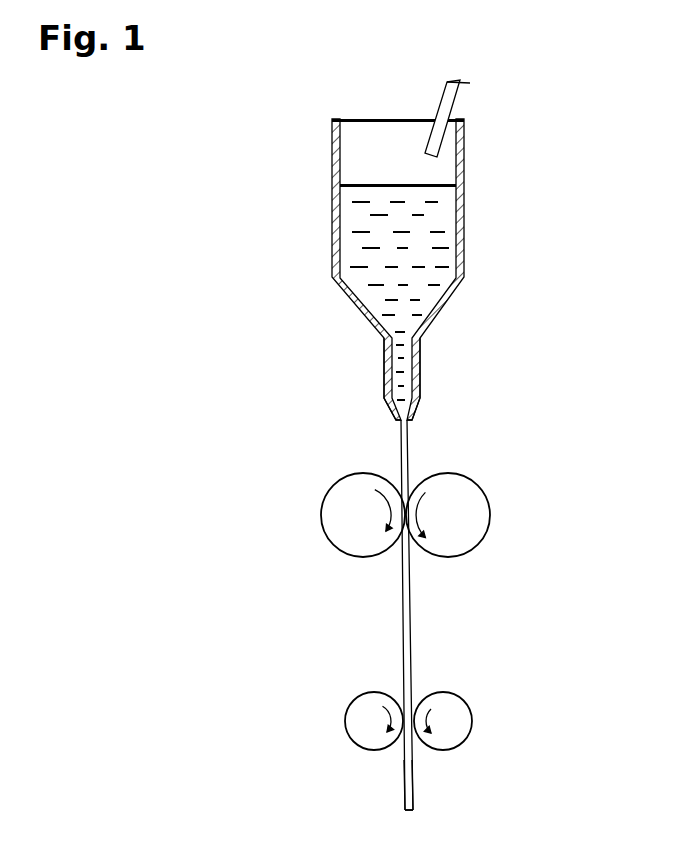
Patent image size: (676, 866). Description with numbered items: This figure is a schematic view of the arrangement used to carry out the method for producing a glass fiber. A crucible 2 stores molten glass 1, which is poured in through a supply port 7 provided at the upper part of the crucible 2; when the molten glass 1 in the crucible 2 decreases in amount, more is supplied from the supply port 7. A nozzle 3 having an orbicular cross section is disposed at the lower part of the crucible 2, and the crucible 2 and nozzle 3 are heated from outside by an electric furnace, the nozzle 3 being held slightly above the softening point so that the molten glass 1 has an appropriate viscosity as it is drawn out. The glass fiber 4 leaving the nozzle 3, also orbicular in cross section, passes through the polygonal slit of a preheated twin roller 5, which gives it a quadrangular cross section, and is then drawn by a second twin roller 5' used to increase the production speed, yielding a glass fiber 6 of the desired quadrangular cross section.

The molten glass 1 is at (357, 222).
The crucible 2 is at (333, 249).
The nozzle 3 is at (385, 362).
The glass fiber 4 is at (401, 450).
The twin roller 5 is at (383, 515).
The twin roller 5' is at (371, 721).
The glass fiber 6 is at (405, 781).
The supply port 7 is at (445, 93).